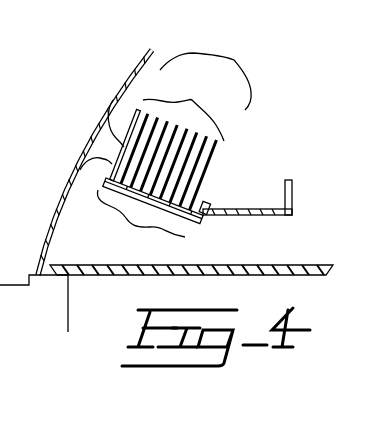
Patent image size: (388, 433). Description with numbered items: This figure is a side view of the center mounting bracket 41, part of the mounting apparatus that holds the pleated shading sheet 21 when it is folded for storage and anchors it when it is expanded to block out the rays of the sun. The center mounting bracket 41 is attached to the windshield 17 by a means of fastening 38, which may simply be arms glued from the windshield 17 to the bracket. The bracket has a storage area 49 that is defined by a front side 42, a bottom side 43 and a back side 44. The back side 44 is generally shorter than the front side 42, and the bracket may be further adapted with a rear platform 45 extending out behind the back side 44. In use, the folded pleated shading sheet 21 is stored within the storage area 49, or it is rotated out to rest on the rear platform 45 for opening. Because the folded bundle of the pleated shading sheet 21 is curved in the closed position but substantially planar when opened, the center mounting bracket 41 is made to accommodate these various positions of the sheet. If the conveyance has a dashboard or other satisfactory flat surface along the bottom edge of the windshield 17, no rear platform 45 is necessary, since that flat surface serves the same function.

The windshield 17 is at (62, 198).
The pleated shading sheet 21 is at (177, 138).
The means of fastening 38 is at (113, 100).
The center mounting bracket 41 is at (191, 232).
The front side 42 is at (118, 149).
The bottom side 43 is at (180, 219).
The back side 44 is at (203, 217).
The rear platform 45 is at (293, 198).
The storage area 49 is at (185, 120).